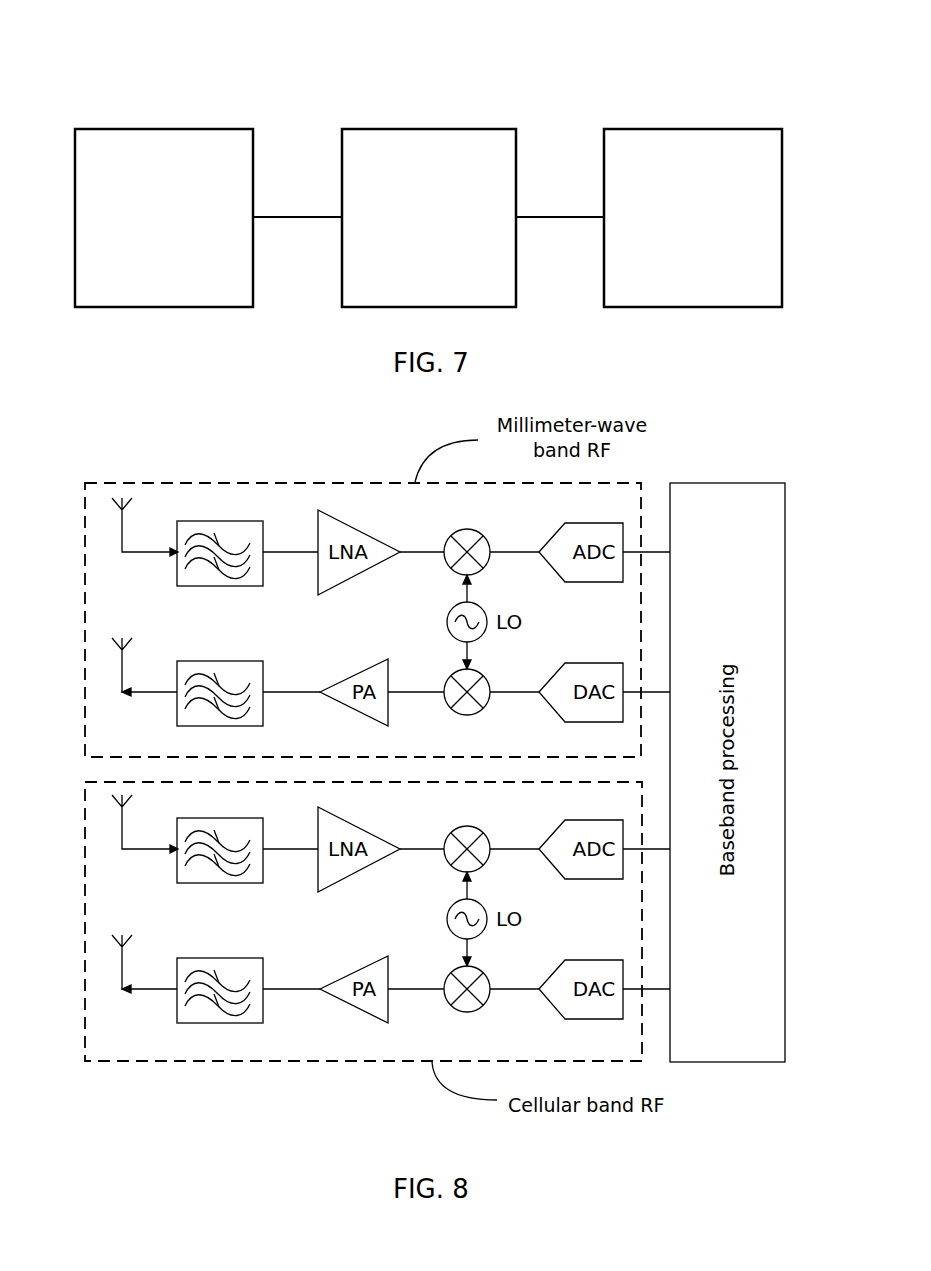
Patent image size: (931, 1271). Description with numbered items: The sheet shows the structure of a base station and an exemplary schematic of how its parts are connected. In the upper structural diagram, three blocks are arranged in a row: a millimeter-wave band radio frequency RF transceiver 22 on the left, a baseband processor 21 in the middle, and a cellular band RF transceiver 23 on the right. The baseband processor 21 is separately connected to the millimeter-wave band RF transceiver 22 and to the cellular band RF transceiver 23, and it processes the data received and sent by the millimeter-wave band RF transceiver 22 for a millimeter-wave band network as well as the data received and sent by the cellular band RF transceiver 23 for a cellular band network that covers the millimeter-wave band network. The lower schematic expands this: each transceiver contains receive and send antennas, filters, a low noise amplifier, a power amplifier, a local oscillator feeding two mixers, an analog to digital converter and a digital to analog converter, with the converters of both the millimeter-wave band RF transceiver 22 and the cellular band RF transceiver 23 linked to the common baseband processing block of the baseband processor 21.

The baseband processor 21 is at (427, 129).
The millimeter-wave band radio frequency RF transceiver 22 is at (160, 129).
The cellular band RF transceiver 23 is at (697, 129).